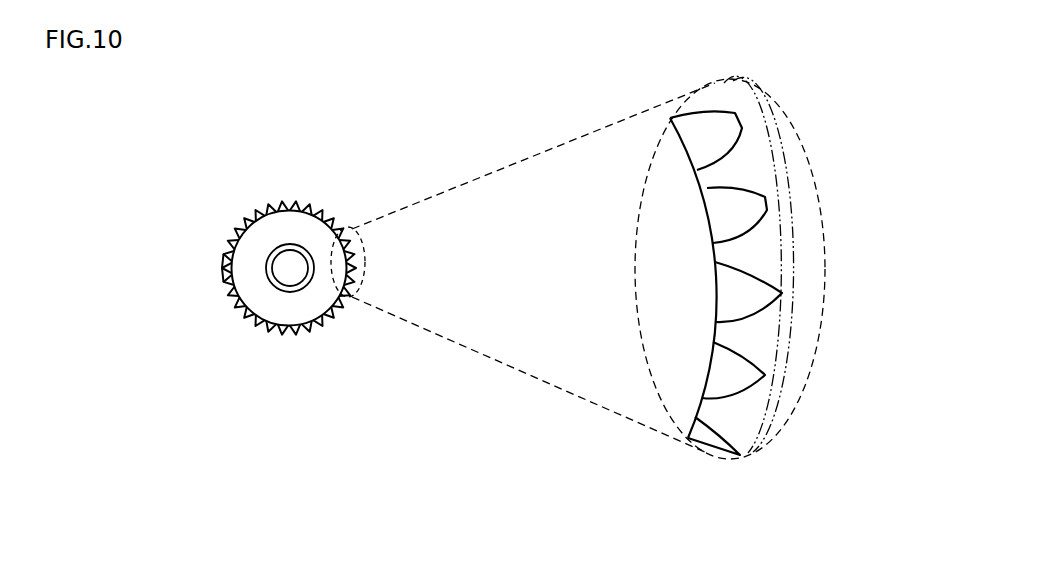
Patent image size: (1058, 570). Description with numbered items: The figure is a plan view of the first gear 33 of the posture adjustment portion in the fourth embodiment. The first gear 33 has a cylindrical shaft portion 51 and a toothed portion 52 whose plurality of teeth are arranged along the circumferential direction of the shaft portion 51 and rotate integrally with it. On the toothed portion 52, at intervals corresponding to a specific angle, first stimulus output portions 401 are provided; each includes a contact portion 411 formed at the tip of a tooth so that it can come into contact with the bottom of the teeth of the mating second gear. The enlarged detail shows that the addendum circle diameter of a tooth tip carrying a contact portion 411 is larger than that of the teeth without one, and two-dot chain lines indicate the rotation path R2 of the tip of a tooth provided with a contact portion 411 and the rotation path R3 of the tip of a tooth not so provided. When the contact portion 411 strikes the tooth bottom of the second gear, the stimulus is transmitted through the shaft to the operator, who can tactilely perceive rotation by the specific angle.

The first gear 33 is at (250, 161).
The shaft portion 51 is at (295, 293).
The toothed portion 52 is at (257, 338).
The first stimulus output portion 401 is at (223, 273).
The contact portion 411 is at (364, 265).
The rotation path of a tip of a tooth provided with a contact portion R2 is at (780, 325).
The rotation path of a tip of a tooth not provided with a contact portion R3 is at (772, 353).